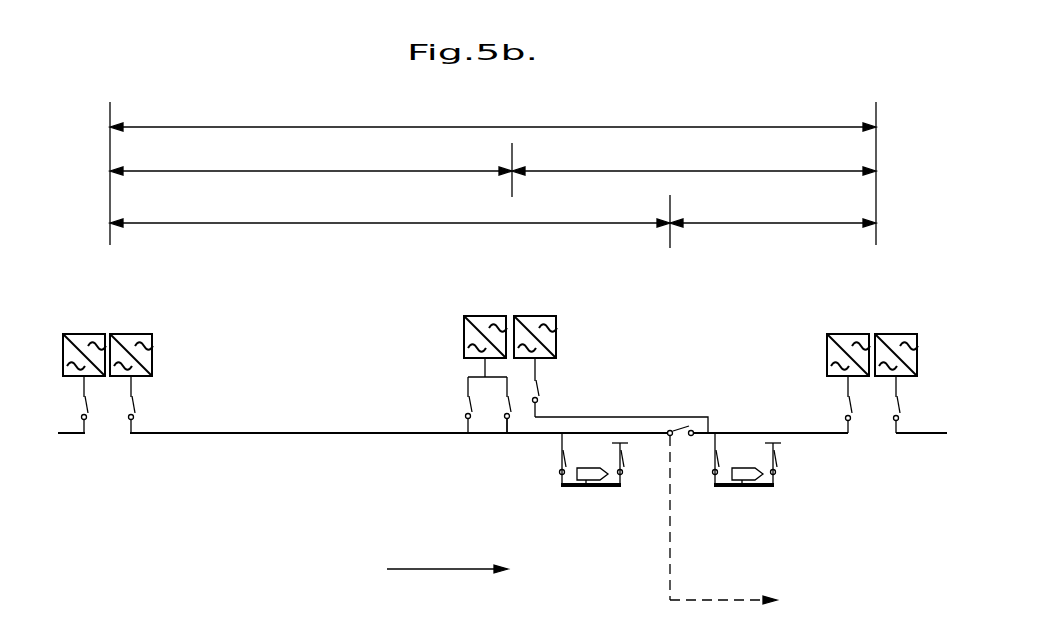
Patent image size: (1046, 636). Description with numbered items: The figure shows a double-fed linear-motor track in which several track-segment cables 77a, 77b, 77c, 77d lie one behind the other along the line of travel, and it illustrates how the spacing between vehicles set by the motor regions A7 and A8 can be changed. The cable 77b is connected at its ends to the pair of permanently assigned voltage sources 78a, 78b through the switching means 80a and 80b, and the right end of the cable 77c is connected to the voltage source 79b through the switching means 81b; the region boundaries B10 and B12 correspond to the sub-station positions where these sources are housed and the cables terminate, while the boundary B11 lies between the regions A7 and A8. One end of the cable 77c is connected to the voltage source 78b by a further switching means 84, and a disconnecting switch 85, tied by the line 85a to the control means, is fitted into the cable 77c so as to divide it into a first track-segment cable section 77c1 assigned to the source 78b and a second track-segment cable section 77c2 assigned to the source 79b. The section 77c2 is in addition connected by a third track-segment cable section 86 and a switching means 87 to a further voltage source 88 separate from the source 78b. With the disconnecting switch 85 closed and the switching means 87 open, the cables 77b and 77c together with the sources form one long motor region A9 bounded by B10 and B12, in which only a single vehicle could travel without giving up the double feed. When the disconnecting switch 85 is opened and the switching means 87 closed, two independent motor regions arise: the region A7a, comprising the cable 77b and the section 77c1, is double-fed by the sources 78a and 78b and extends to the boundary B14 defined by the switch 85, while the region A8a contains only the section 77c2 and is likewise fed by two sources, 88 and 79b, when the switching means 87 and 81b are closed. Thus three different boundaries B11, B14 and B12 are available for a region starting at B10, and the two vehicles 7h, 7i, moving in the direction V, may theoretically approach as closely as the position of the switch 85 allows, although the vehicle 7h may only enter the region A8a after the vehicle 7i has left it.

The region boundary B10 is at (110, 122).
The region boundary B11 is at (512, 158).
The region boundary B12 is at (876, 115).
The region boundary B14 is at (670, 242).
The motor region A9 is at (493, 116).
The motor region A7 is at (311, 161).
The motor region A8 is at (694, 160).
The motor region A7a is at (390, 212).
The motor region A8a is at (773, 212).
The voltage source 78a is at (152, 352).
The voltage source 78b is at (463, 330).
The further voltage source 88 is at (556, 338).
The switching means 87 is at (538, 390).
The third track-segment cable section 86 is at (633, 416).
The voltage source 79b is at (843, 334).
The switching means 80a is at (134, 409).
The switching means 80b is at (465, 409).
The switching means 81b is at (846, 402).
The track-segment cable 77a is at (72, 435).
The track-segment cable 77b is at (183, 435).
The track-segment cable 77c is at (527, 442).
The first track-segment cable section 77c1 is at (557, 435).
The second track-segment cable section 77c2 is at (820, 435).
The track-segment cable 77d is at (928, 435).
The further switching means 84 is at (503, 410).
The disconnecting switch 85 is at (675, 438).
The line 85a is at (666, 555).
The vehicle 7h is at (586, 487).
The vehicle 7i is at (742, 466).
The travel direction V is at (449, 565).